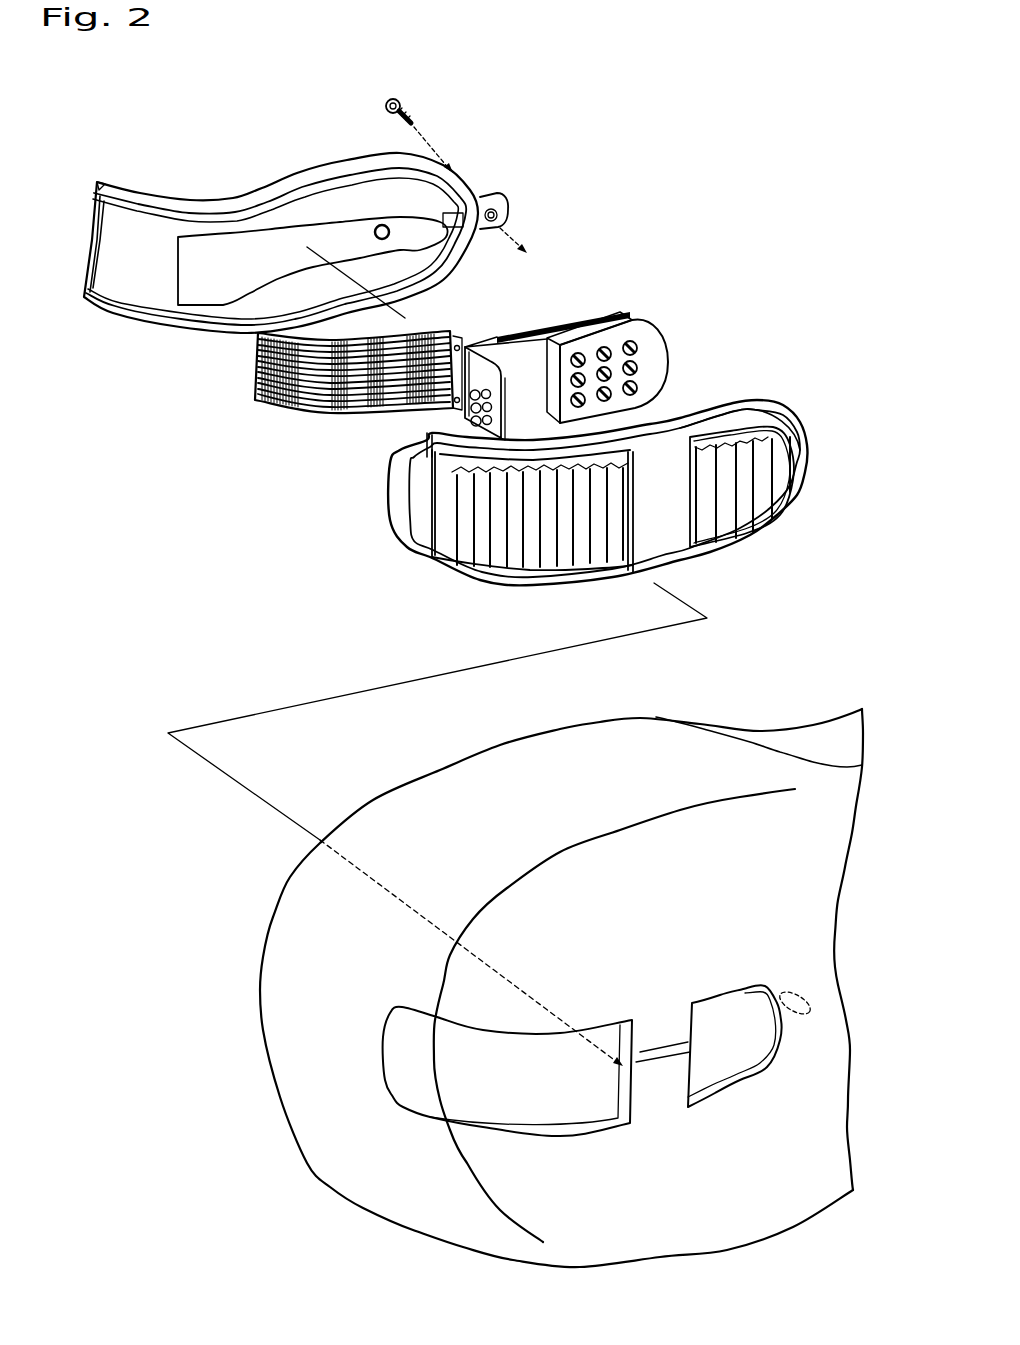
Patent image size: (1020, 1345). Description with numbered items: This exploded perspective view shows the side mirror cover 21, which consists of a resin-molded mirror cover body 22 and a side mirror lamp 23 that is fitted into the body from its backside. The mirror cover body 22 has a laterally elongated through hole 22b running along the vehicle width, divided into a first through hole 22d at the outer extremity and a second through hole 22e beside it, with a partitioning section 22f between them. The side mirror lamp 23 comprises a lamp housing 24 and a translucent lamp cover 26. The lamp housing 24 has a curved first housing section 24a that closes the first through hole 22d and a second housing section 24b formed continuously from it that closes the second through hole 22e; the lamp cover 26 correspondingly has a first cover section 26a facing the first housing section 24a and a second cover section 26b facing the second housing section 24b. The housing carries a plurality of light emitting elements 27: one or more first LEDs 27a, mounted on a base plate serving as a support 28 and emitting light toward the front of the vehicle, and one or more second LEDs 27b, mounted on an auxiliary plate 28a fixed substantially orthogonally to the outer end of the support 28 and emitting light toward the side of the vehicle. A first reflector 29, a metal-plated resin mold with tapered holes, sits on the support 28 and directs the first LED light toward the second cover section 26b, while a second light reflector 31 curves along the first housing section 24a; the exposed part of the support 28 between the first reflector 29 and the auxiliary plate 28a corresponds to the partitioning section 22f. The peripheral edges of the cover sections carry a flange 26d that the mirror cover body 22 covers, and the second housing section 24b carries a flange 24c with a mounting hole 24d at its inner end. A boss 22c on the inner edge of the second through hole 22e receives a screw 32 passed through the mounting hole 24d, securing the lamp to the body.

The side mirror cover 21 is at (238, 670).
The mirror cover body 22 is at (651, 1243).
The through hole 22b is at (753, 1157).
The boss 22c is at (799, 990).
The first through hole 22d is at (567, 1120).
The second through hole 22e is at (710, 1080).
The partitioning section 22f is at (660, 1053).
The side mirror lamp 23 is at (783, 158).
The lamp housing 24 is at (340, 217).
The first housing section 24a is at (261, 178).
The second housing section 24b is at (393, 153).
The flange 24c is at (493, 203).
The mounting hole 24d is at (497, 227).
The lamp cover 26 is at (637, 487).
The first cover section 26a is at (637, 572).
The second cover section 26b is at (752, 503).
The flange 26d is at (767, 417).
The light emitting elements 27 is at (640, 357).
The first LED 27a is at (637, 387).
The second LED 27b is at (463, 410).
The support 28 is at (567, 327).
The auxiliary plate 28a is at (462, 340).
The first reflector 29 is at (640, 327).
The second light reflector 31 is at (288, 415).
The screw 32 is at (413, 103).